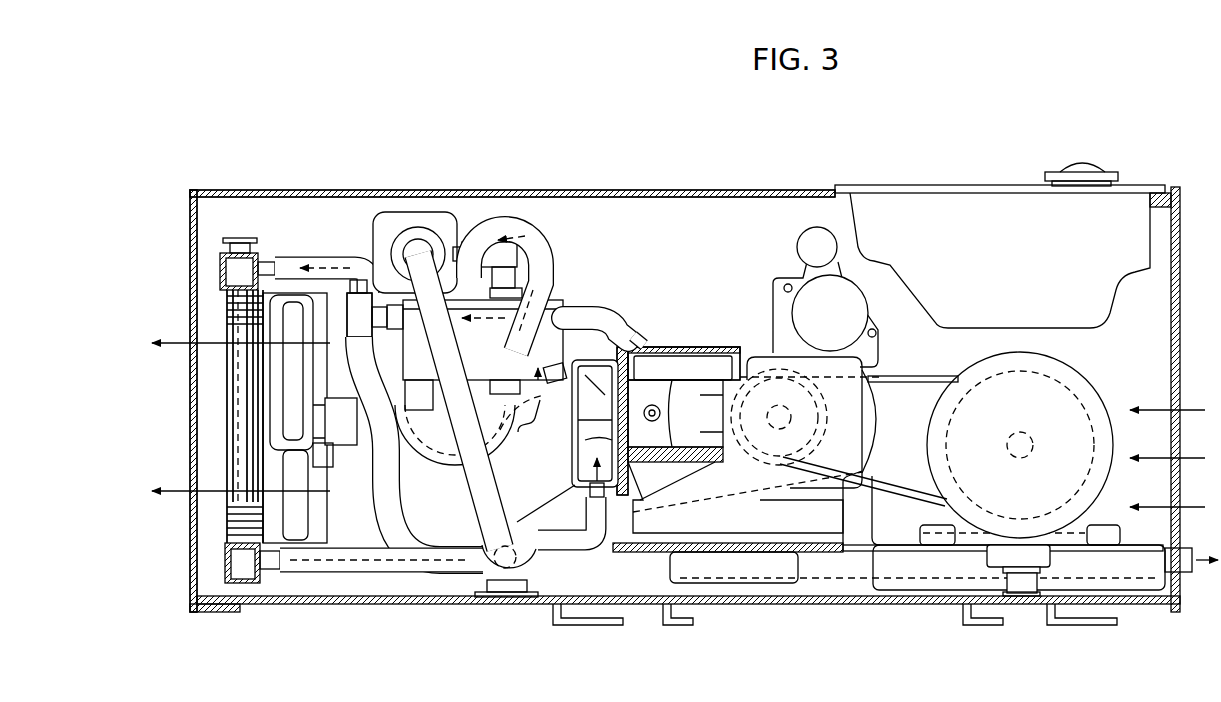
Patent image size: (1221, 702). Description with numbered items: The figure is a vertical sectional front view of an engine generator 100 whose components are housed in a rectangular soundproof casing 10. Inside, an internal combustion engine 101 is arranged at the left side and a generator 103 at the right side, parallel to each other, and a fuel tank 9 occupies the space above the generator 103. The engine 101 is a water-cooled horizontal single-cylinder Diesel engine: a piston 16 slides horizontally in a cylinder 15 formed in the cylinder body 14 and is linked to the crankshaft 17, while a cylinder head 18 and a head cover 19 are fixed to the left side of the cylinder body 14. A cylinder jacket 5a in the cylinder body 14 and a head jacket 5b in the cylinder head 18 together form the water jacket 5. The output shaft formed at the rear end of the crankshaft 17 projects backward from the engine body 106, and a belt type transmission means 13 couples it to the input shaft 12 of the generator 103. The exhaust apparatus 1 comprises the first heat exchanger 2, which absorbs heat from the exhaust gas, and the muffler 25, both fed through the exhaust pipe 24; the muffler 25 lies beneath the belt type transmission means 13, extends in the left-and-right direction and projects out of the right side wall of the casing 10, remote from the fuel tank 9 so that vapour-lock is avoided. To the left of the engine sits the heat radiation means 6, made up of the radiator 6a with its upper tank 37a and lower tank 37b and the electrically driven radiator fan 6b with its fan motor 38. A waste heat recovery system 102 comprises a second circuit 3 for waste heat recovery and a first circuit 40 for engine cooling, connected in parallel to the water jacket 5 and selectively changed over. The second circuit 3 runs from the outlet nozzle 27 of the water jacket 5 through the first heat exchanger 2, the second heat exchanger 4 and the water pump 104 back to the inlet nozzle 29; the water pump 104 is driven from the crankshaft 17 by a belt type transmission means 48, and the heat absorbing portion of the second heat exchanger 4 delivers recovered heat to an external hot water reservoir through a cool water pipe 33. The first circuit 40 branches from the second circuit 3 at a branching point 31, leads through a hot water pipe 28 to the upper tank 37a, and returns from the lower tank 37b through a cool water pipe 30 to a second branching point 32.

The engine generator 100 is at (186, 222).
The soundproof casing 10 is at (607, 189).
The fuel tank 9 is at (1000, 245).
The generator 103 is at (1096, 380).
The input shaft 12 is at (1031, 437).
The muffler 25 is at (890, 543).
The exhaust apparatus 1 is at (1158, 575).
The crankshaft 17 is at (795, 417).
The engine body 106 is at (866, 401).
The belt type transmission means 13 is at (905, 376).
The internal combustion engine 101 is at (746, 284).
The cylinder body 14 is at (665, 470).
The cylinder 15 is at (681, 461).
The water jacket 5 is at (714, 264).
The cylinder jacket 5a is at (697, 346).
The head jacket 5b is at (628, 345).
The piston 16 is at (640, 396).
The heat radiation means 6 is at (153, 419).
The radiator 6a is at (230, 437).
The radiator fan 6b is at (290, 487).
The fan motor 38 is at (338, 446).
The upper tank 37a is at (222, 274).
The lower tank 37b is at (225, 568).
The first circuit 40 is at (292, 257).
The first heat exchanger 2 is at (479, 382).
The hot water pipe 28 is at (362, 256).
The branching point 31 is at (345, 300).
The head cover 19 is at (520, 452).
The exhaust pipe 24 is at (540, 435).
The cool water pipe 30 is at (368, 573).
The outlet nozzle 27 is at (658, 341).
The cylinder head 18 is at (607, 357).
The second heat exchanger 4 is at (410, 211).
The cool water pipe 33 is at (556, 259).
The second circuit 3 is at (512, 226).
The waste heat recovery system 102 is at (465, 216).
The branching point 32 is at (487, 582).
The water pump 104 is at (512, 597).
The belt type transmission means 48 is at (573, 552).
The inlet nozzle 29 is at (590, 499).